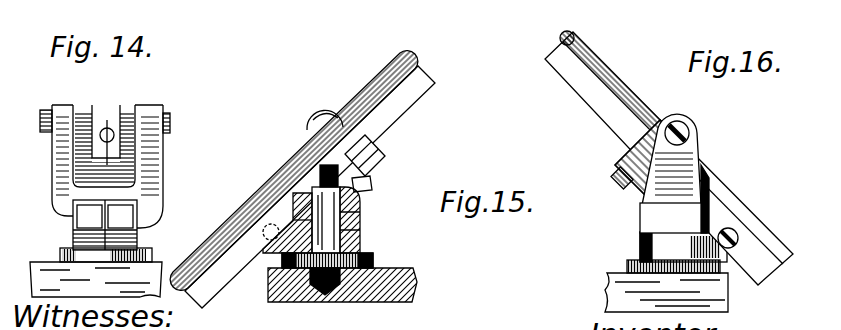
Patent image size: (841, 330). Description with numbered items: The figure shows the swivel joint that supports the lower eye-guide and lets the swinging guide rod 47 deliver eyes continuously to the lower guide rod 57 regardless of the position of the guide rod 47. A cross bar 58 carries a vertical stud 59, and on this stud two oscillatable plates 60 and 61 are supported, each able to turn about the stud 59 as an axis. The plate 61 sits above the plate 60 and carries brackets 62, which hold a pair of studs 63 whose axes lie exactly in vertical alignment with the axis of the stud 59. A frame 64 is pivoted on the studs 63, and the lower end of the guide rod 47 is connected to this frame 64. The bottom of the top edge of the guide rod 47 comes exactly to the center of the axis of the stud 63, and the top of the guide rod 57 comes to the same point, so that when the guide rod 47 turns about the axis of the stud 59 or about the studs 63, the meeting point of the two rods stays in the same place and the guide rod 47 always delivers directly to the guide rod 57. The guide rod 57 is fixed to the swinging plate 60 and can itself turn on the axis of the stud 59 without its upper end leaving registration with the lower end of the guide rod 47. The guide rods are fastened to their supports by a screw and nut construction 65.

In FIG. 15, the swinging guide rod 47 is at (382, 72).
In FIG. 16, the swinging guide rod 47 is at (623, 82).
In FIG. 15, the lower guide rod 57 is at (251, 198).
In FIG. 16, the lower guide rod 57 is at (737, 203).
In FIG. 14, the cross bar 58 is at (48, 265).
In FIG. 15, the cross bar 58 is at (405, 270).
In FIG. 16, the cross bar 58 is at (612, 277).
In FIG. 15, the vertical stud 59 is at (362, 212).
In FIG. 14, the oscillatable plate 60 is at (139, 228).
In FIG. 15, the oscillatable plate 60 is at (360, 235).
In FIG. 16, the oscillatable plate 60 is at (643, 242).
In FIG. 15, the oscillatable plate 61 is at (362, 197).
In FIG. 14, the bracket 62 is at (54, 178).
In FIG. 16, the bracket 62 is at (648, 202).
In FIG. 14, the stud 63 is at (44, 112).
In FIG. 15, the stud 63 is at (318, 110).
In FIG. 16, the stud 63 is at (680, 124).
In FIG. 14, the frame 64 is at (119, 124).
In FIG. 16, the frame 64 is at (625, 152).
In FIG. 14, the screw and nut construction 65 is at (97, 128).
In FIG. 15, the screw and nut construction 65 is at (387, 152).
In FIG. 16, the screw and nut construction 65 is at (616, 180).